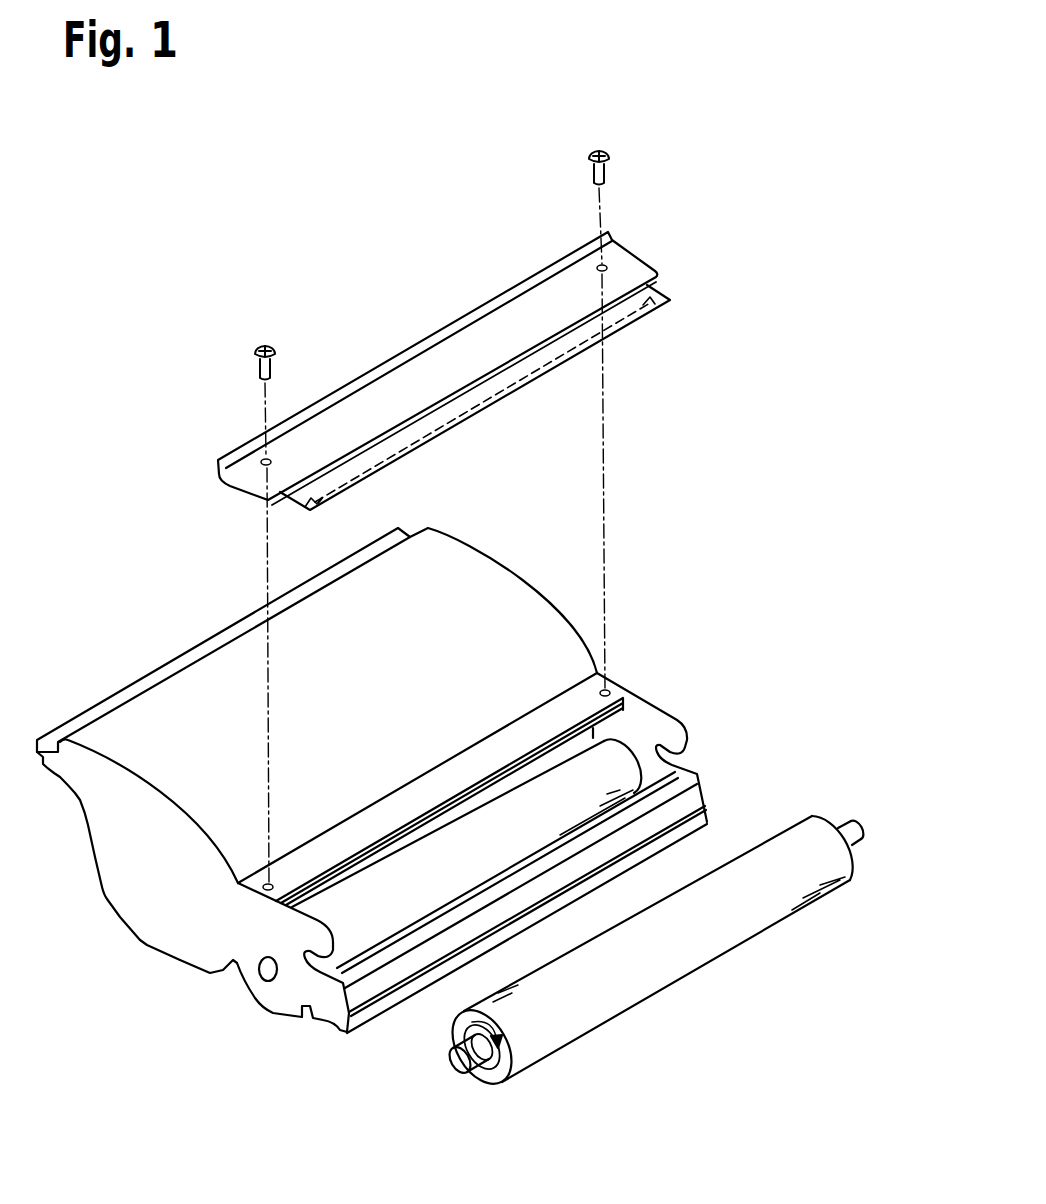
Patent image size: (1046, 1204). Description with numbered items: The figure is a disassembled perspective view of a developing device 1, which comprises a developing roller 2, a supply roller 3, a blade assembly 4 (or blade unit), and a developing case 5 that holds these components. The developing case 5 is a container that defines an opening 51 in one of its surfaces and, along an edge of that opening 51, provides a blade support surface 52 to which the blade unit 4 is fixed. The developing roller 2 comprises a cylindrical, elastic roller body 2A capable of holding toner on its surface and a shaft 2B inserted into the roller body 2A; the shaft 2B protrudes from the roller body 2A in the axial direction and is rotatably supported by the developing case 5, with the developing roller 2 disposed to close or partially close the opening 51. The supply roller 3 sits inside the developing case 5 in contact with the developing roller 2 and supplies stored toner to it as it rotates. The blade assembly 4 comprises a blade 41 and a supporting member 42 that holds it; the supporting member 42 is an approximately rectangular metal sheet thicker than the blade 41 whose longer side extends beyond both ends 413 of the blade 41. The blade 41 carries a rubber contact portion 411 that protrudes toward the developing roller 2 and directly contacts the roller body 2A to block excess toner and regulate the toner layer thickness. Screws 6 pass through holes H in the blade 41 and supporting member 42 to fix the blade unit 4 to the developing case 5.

The developing device 1 is at (370, 148).
The developing roller 2 is at (669, 955).
The roller body 2A is at (690, 964).
The shaft 2B is at (857, 826).
The supply roller 3 is at (523, 800).
The blade assembly 4 is at (461, 387).
The blade 41 is at (469, 416).
The contact portion 411 is at (304, 513).
The ends of the blade 413 is at (297, 503).
The supporting member 42 is at (629, 252).
The developing case 5 is at (372, 811).
The opening 51 is at (422, 951).
The blade support surface 52 is at (453, 766).
The screws 6 is at (268, 346).
The holes H is at (262, 461).